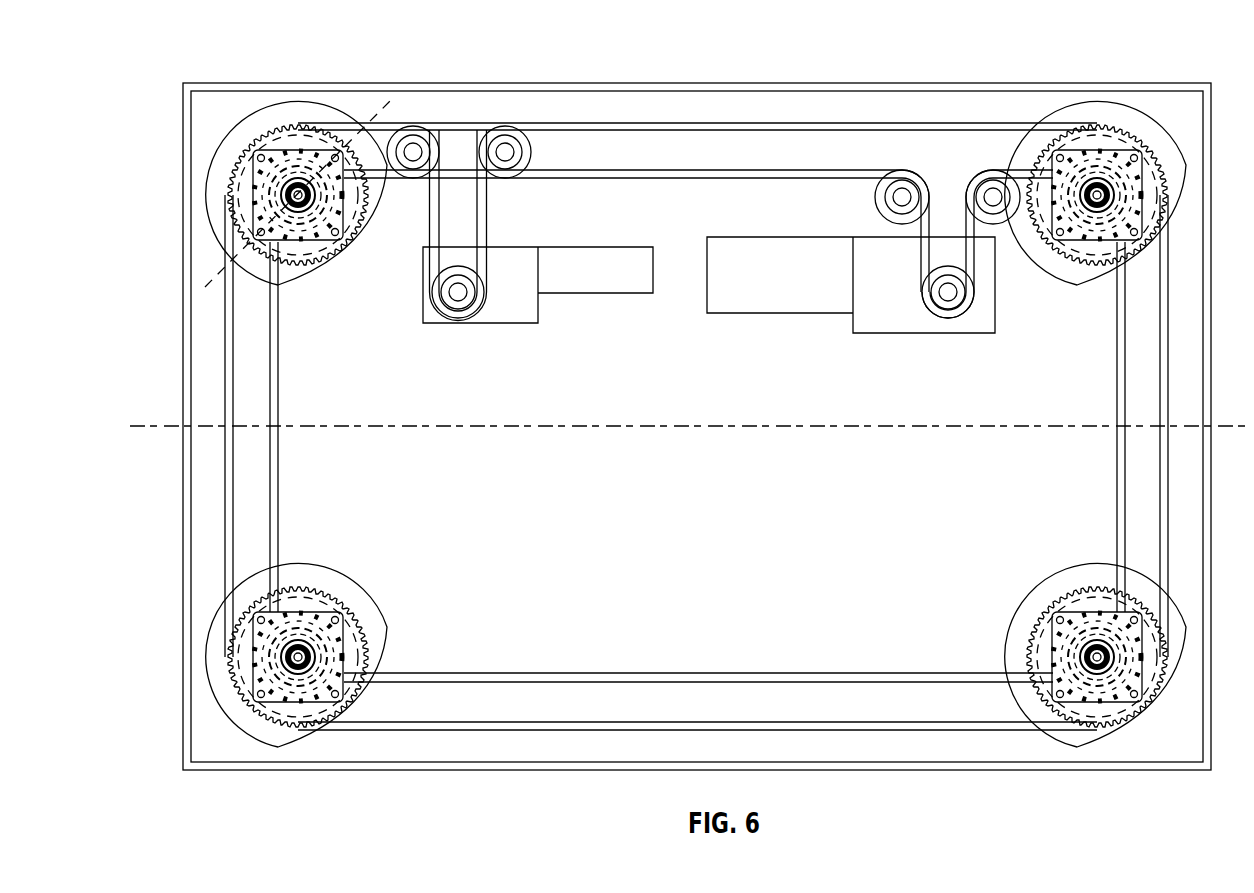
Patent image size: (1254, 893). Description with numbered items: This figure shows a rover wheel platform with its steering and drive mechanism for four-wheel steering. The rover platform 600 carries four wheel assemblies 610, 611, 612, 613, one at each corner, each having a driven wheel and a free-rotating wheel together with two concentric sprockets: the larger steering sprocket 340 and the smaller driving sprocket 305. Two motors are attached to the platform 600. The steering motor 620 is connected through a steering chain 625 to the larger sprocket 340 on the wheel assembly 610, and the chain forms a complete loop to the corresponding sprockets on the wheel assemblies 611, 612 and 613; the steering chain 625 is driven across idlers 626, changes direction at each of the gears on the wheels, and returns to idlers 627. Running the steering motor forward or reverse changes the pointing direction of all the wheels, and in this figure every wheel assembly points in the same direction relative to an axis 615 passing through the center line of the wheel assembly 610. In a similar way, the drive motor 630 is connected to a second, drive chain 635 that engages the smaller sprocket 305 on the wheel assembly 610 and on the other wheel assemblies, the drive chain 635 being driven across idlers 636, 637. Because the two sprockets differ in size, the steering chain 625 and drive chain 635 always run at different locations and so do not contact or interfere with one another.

The rover platform 600 is at (296, 157).
The wheel assembly 610 is at (257, 184).
The wheel assembly 611 is at (268, 750).
The wheel assembly 612 is at (1080, 750).
The wheel assembly 613 is at (1132, 103).
The steering sprocket 340 is at (245, 193).
The driving sprocket 305 is at (316, 244).
The axis 615 is at (258, 192).
The steering motor 620 is at (597, 244).
The steering chain 625 is at (432, 233).
The idler 626 is at (423, 125).
The idler 627 is at (505, 125).
The drive motor 630 is at (770, 237).
The drive chain 635 is at (797, 168).
The idler 636 is at (900, 188).
The idler 637 is at (993, 190).